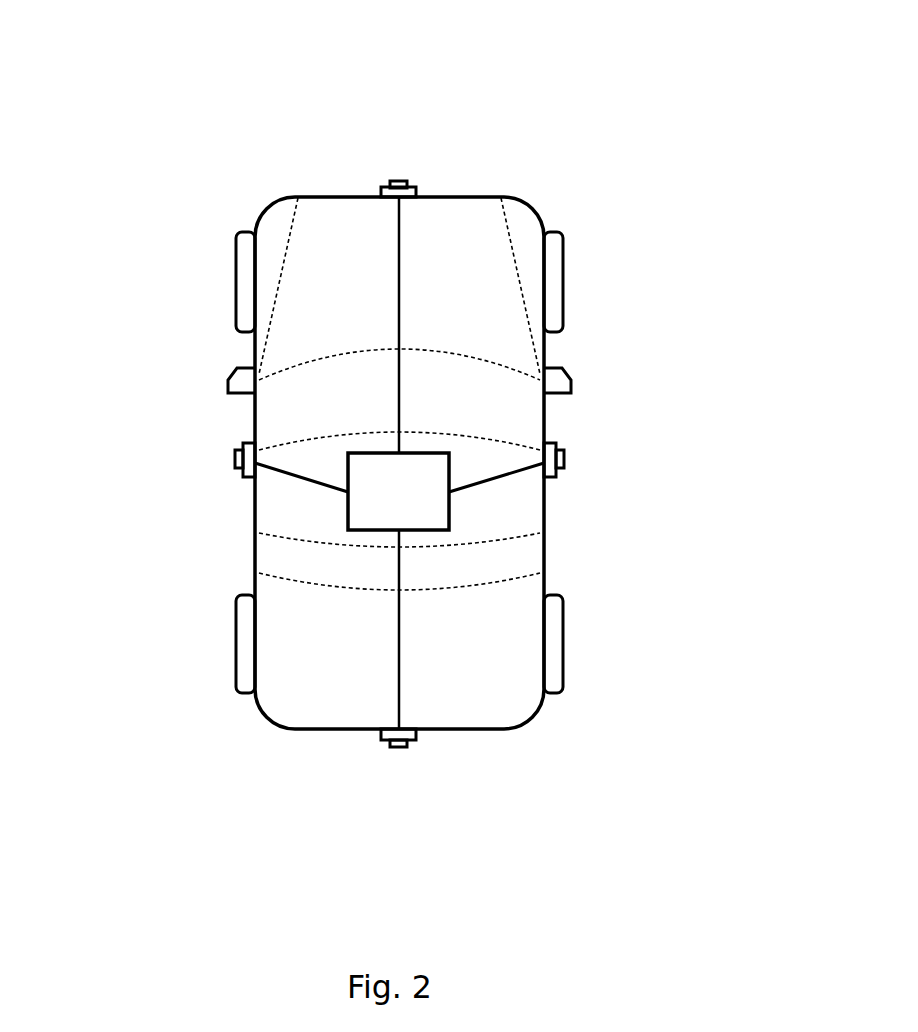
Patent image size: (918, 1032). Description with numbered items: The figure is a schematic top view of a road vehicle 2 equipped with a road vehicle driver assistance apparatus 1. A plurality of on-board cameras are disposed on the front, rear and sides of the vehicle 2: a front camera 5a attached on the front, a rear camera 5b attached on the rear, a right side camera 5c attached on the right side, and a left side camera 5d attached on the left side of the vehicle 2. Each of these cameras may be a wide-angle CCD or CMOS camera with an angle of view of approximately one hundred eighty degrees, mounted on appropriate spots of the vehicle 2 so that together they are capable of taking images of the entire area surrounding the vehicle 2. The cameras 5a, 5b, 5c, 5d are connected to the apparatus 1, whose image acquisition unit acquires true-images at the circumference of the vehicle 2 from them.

The road vehicle driver assistance apparatus 1 is at (406, 507).
The road vehicle 2 is at (279, 157).
The front camera 5a is at (399, 181).
The rear camera 5b is at (399, 747).
The right side camera 5c is at (564, 461).
The left side camera 5d is at (235, 458).